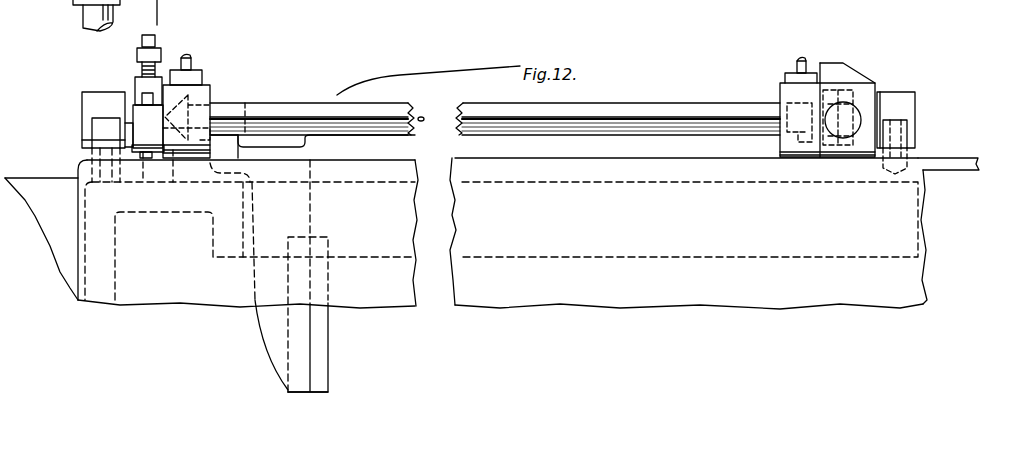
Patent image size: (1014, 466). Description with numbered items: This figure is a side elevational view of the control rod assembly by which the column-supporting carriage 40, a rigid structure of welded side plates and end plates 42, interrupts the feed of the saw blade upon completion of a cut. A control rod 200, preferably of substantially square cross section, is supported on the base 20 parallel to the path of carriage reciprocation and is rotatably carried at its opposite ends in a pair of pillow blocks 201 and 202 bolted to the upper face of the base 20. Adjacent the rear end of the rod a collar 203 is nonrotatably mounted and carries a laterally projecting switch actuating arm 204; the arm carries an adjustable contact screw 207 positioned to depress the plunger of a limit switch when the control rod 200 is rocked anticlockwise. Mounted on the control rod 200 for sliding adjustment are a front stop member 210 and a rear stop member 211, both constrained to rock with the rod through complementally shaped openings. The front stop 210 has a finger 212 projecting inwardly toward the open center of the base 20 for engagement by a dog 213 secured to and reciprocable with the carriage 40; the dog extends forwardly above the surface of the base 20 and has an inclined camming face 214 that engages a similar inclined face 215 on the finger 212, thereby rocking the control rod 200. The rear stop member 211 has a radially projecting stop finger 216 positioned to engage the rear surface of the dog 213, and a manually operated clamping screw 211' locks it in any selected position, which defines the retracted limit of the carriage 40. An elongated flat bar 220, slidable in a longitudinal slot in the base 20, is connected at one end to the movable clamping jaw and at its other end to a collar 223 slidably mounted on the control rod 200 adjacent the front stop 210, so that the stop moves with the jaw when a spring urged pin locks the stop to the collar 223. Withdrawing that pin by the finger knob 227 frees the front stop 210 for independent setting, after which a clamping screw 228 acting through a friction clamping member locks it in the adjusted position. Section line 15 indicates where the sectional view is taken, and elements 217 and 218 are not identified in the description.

The section line 15 is at (128, 15).
The base 20 is at (108, 245).
The carriage 40 is at (318, 393).
The end plates 42 is at (318, 353).
The control rod 200 is at (706, 112).
The pillow block 201 is at (92, 152).
The pillow block 202 is at (893, 105).
The collar 203 is at (137, 95).
The switch actuating arm 204 is at (138, 57).
The screw 207 is at (137, 68).
The front stop member 210 is at (782, 96).
The rear stop member 211 is at (215, 109).
The clamping screw 211' is at (231, 45).
The finger 212 is at (805, 142).
The dog 213 is at (262, 312).
The inclined camming face 214 is at (229, 110).
The inclined face 215 is at (793, 125).
The stop finger 216 is at (173, 150).
The bracket 217 is at (312, 158).
The set screw 218 is at (186, 84).
The elongated flat bar 220 is at (957, 163).
The collar 223 is at (865, 92).
The finger knob 227 is at (845, 100).
The clamping screw 228 is at (798, 63).